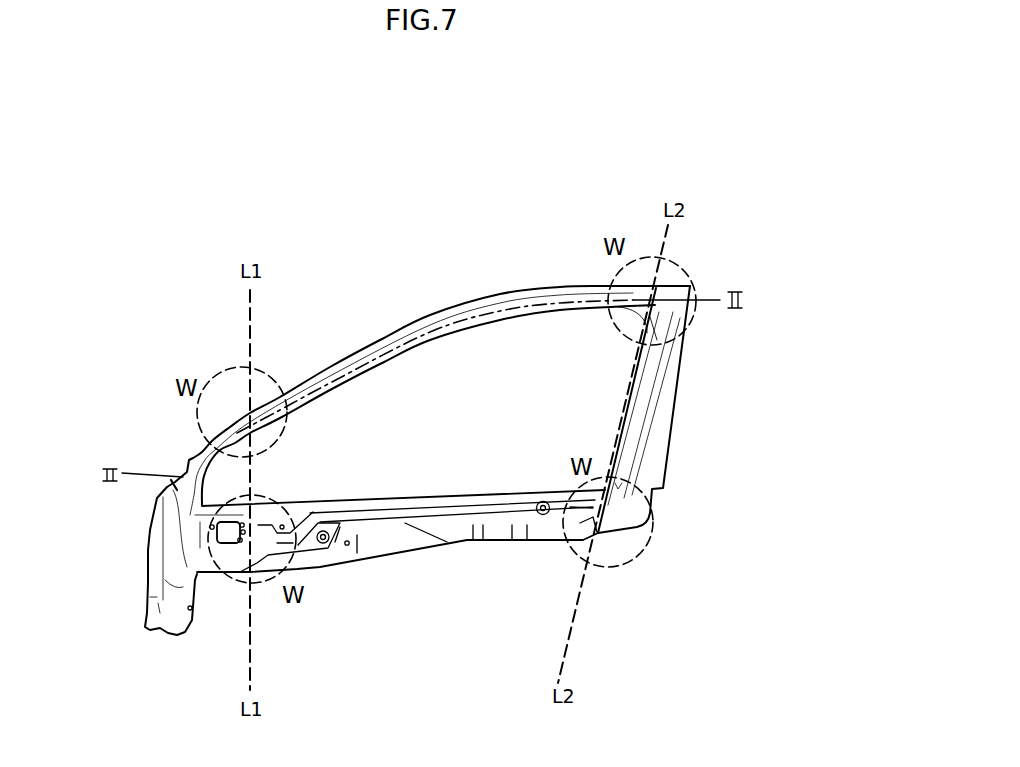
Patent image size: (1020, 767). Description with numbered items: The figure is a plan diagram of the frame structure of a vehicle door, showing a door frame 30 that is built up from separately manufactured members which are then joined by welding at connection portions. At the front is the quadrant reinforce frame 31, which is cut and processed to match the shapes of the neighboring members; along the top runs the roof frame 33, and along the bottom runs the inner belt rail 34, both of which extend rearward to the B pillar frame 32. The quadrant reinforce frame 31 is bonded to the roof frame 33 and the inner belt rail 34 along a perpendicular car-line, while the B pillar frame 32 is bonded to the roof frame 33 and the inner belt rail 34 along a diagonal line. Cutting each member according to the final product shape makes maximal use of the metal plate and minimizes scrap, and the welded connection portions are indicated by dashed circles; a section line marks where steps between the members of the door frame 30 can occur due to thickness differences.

The door frame 30 is at (757, 134).
The quadrant reinforce frame 31 is at (153, 547).
The B pillar frame 32 is at (679, 393).
The roof frame 33 is at (416, 318).
The inner belt rail 34 is at (398, 538).